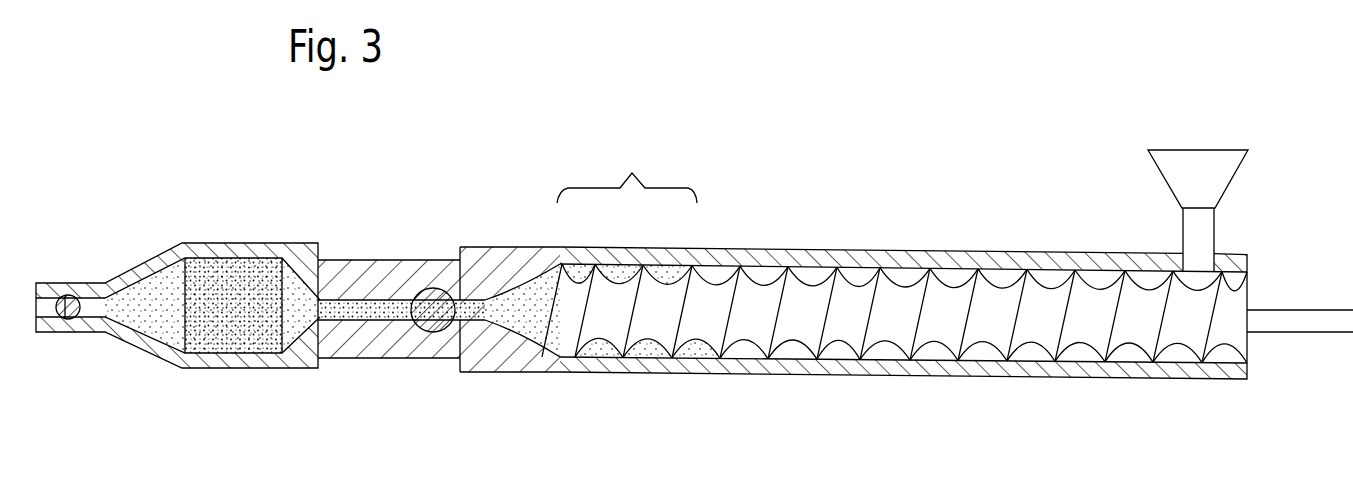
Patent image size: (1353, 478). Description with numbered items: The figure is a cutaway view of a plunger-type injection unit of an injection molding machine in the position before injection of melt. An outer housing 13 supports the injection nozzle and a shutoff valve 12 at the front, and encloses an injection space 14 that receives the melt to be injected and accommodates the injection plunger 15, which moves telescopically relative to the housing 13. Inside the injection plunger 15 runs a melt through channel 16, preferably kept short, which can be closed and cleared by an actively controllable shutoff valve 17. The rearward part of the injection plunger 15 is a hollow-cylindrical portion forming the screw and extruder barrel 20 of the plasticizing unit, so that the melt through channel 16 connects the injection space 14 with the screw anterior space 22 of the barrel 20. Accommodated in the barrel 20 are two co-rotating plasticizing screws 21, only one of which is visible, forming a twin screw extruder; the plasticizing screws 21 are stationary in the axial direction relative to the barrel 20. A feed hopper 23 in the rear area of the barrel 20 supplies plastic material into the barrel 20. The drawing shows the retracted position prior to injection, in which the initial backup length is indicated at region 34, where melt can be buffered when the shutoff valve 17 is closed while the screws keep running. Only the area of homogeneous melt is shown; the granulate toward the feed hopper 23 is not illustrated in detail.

The shutoff valve 12 is at (64, 292).
The outer housing 13 is at (248, 250).
The injection space 14 is at (152, 292).
The injection plunger 15 is at (373, 268).
The melt through channel 16 is at (355, 308).
The shutoff valve 17 is at (432, 325).
The screw and extruder barrel 20 is at (862, 378).
The plasticizing screw 21 is at (1078, 325).
The screw anterior space 22 is at (525, 298).
The feed hopper 23 is at (1225, 173).
The buffer region 34 is at (632, 92).